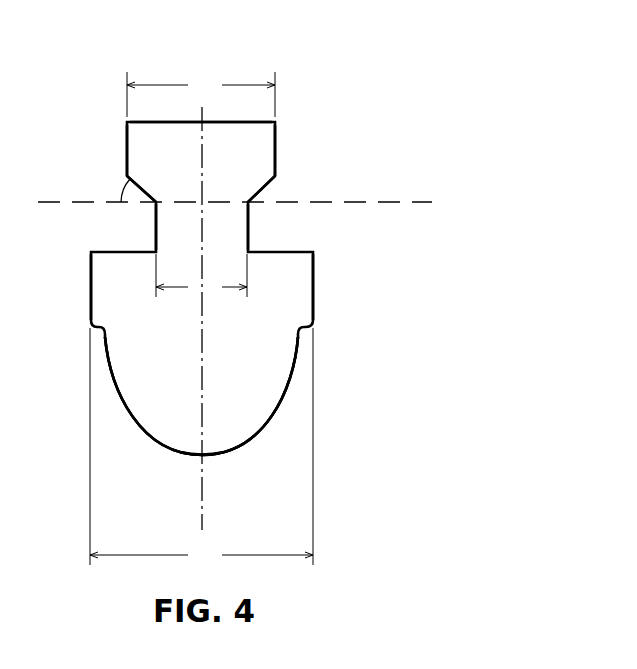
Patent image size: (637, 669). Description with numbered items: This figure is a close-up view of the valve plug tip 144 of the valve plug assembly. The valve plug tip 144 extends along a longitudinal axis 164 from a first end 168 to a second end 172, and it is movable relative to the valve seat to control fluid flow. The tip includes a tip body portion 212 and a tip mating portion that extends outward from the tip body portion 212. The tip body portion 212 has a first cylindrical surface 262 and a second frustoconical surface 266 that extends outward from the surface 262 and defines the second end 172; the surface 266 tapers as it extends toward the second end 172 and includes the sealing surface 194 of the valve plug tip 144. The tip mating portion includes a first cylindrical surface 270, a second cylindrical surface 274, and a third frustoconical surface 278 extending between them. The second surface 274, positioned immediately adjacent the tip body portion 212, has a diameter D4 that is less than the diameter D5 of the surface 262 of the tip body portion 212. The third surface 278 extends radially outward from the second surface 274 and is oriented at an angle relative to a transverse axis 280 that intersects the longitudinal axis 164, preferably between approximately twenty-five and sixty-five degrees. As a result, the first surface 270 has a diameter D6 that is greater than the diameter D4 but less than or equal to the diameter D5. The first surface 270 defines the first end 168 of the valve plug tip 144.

The valve plug tip 144 is at (441, 74).
The first end 168 is at (233, 121).
The first cylindrical surface 270 is at (277, 148).
The third frustoconical surface 278 is at (262, 190).
The transverse axis 280 is at (388, 200).
The second cylindrical surface 274 is at (250, 237).
The first cylindrical surface 262 is at (315, 284).
The tip body portion 212 is at (320, 348).
The second frustoconical surface 266 is at (137, 419).
The sealing surface 194 is at (264, 422).
The second end 172 is at (205, 458).
The longitudinal axis 164 is at (203, 500).
The diameter D4 is at (201, 276).
The diameter D5 is at (201, 447).
The diameter D6 is at (201, 94).